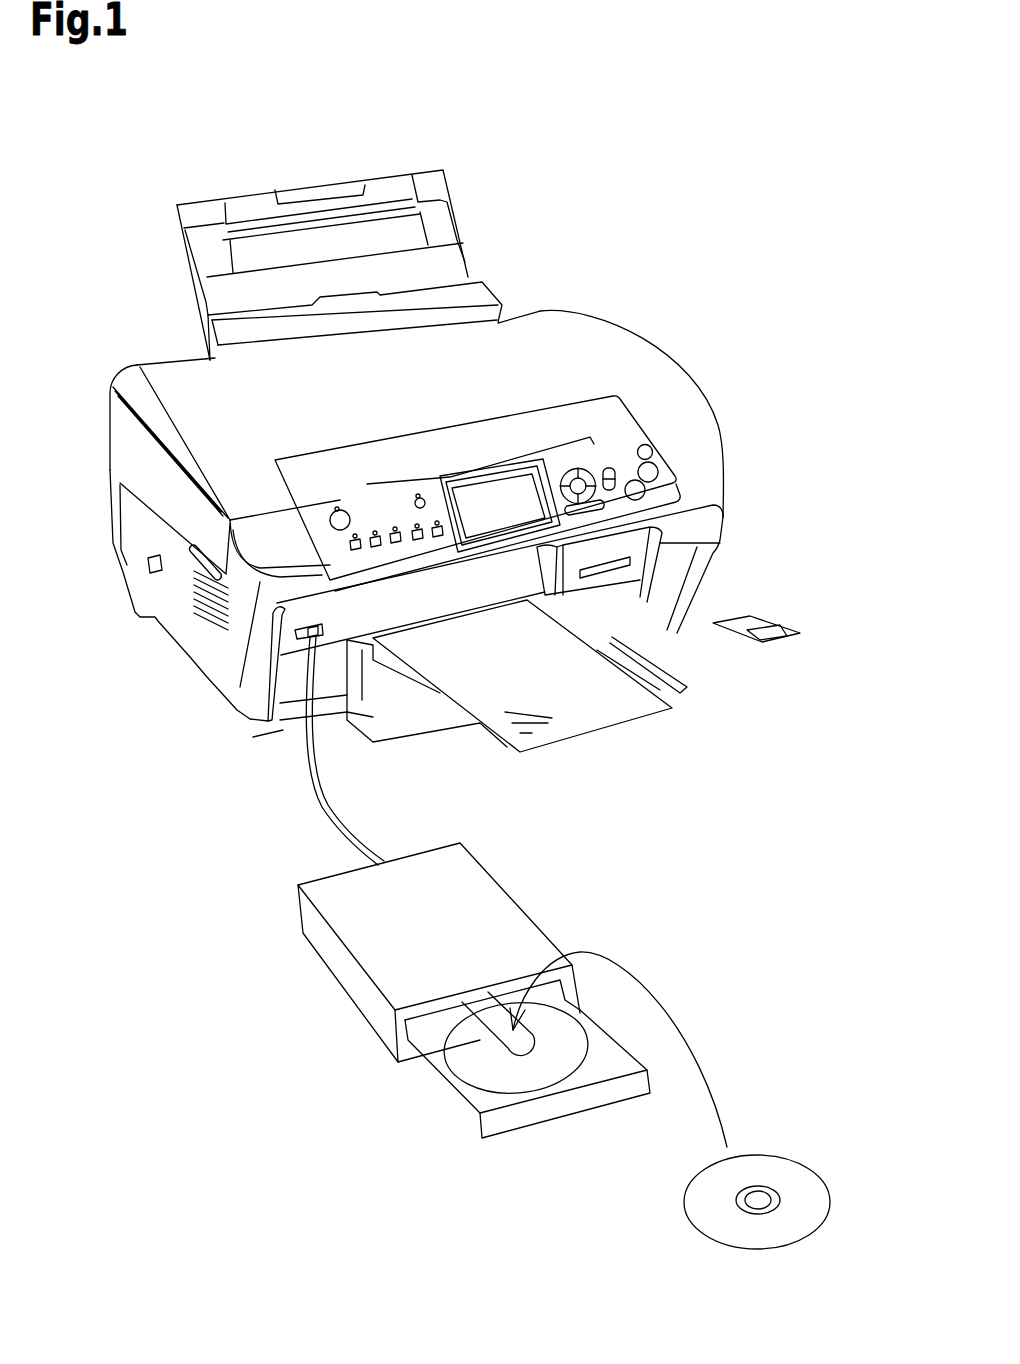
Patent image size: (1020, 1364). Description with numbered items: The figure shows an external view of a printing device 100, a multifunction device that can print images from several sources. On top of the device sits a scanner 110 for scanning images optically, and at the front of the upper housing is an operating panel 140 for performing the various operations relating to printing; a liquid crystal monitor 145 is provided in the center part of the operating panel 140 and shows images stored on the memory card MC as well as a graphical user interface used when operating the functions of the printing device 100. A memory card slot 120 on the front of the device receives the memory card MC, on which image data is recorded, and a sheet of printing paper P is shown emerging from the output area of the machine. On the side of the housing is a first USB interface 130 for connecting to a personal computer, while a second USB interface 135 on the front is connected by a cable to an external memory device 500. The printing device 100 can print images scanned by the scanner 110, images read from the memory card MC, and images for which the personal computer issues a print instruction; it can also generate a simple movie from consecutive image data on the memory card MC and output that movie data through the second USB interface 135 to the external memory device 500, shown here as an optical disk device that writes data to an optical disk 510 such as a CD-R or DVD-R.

The printing device 100 is at (782, 153).
The scanner 110 is at (570, 372).
The memory card slot 120 is at (663, 545).
The first USB interface 130 is at (158, 568).
The second USB interface 135 is at (305, 637).
The operating panel 140 is at (622, 457).
The liquid crystal monitor 145 is at (522, 495).
The memory card MC is at (778, 621).
The printing paper P is at (570, 710).
The external memory device 500 is at (363, 1018).
The optical disk 510 is at (813, 1228).